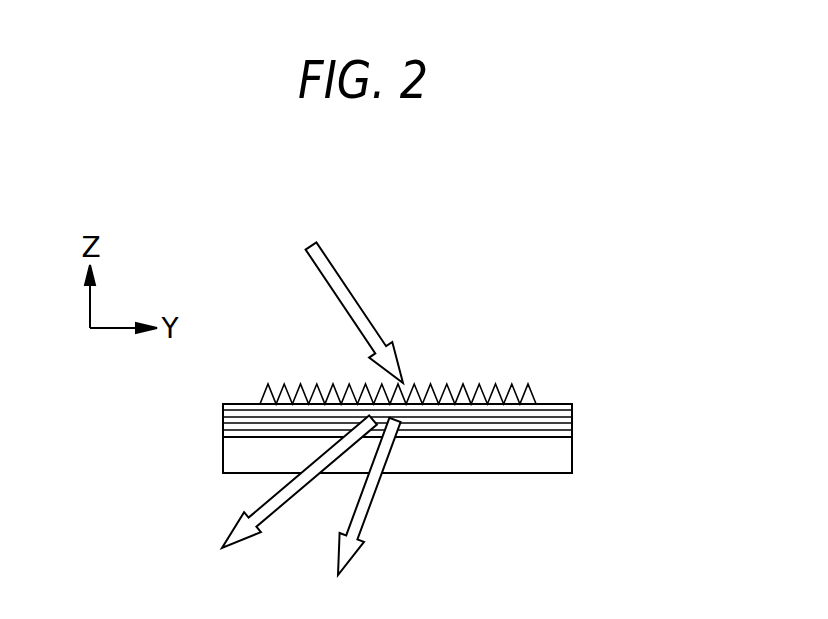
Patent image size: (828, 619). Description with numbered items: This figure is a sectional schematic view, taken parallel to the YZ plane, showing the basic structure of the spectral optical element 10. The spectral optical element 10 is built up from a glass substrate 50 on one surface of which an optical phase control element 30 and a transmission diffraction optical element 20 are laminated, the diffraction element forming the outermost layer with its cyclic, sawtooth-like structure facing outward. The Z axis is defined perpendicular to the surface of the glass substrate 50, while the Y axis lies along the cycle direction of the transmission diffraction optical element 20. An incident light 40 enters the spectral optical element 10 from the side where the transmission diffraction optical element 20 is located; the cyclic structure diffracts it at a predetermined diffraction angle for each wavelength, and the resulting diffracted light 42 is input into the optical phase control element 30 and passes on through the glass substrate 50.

The spectral optical element 10 is at (433, 362).
The transmission diffraction optical element 20 is at (534, 389).
The optical phase control element 30 is at (565, 420).
The incident light 40 is at (355, 292).
The diffracted light 42 is at (300, 497).
The glass substrate 50 is at (565, 457).